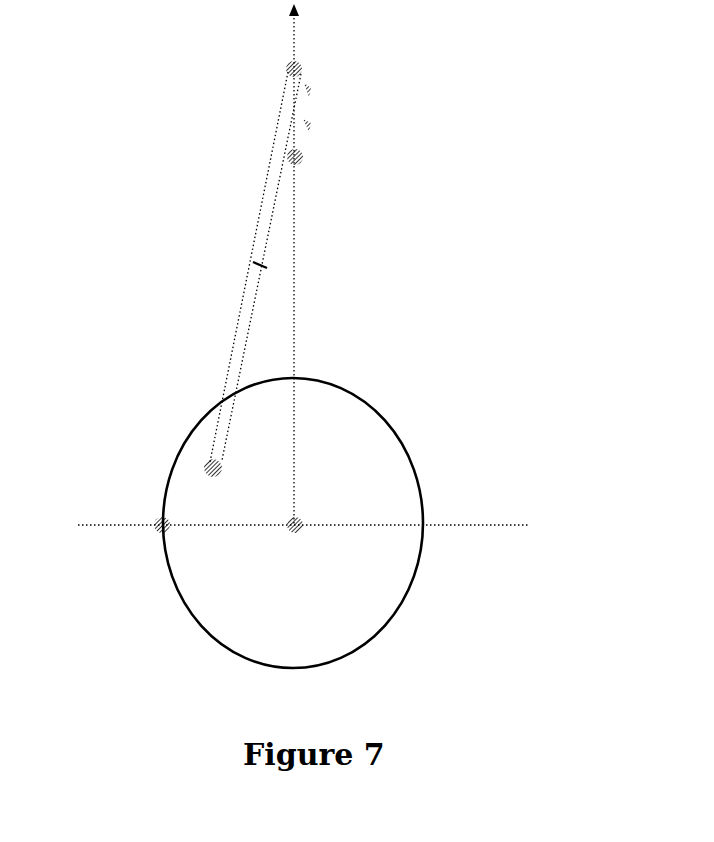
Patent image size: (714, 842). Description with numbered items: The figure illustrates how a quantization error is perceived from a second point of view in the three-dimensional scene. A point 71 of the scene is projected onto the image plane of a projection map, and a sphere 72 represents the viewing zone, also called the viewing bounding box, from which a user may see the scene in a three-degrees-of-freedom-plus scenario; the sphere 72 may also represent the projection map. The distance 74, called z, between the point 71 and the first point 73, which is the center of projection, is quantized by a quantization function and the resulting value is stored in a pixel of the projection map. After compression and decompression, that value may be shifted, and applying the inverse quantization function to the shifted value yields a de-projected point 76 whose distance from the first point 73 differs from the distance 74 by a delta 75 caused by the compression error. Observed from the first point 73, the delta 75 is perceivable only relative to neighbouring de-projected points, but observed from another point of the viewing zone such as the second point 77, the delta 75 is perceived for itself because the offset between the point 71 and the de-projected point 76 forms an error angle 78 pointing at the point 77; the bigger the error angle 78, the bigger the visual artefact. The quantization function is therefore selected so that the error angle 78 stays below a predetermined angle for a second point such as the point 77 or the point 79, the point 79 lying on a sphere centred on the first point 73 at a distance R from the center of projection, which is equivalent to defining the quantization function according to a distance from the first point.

The point 71 is at (308, 168).
The sphere 72 is at (422, 594).
The first point 73 is at (285, 535).
The distance 74 is at (302, 333).
The delta 75 is at (358, 101).
The de-projected point 76 is at (277, 68).
The second point 77 is at (203, 462).
The error angle 78 is at (245, 263).
The second point 79 is at (143, 513).